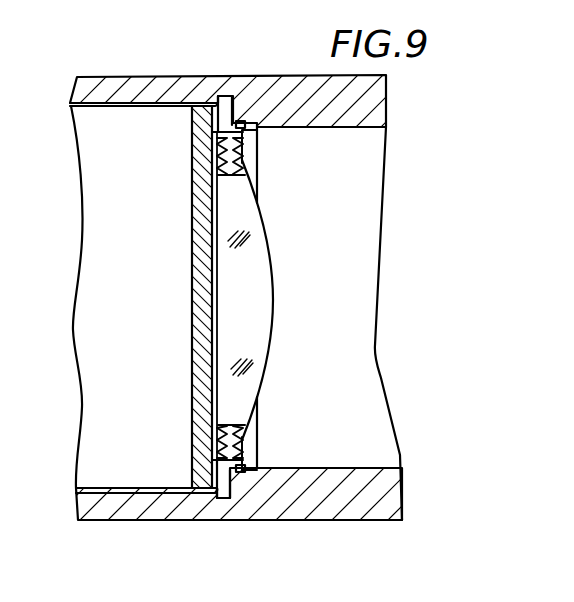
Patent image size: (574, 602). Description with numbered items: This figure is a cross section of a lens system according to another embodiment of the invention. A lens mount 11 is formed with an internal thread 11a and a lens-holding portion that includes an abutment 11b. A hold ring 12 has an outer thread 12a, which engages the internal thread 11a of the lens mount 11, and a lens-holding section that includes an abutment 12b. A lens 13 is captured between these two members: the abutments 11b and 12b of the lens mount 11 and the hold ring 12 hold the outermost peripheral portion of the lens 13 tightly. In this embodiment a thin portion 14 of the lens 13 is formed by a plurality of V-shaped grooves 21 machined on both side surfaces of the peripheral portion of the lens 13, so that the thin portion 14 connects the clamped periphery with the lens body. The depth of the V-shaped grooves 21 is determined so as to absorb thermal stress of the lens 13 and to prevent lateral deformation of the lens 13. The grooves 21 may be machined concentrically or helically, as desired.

The lens mount 11 is at (352, 487).
The internal thread 11a is at (155, 491).
The abutment 11b is at (244, 121).
The hold ring 12 is at (196, 270).
The outer thread 12a is at (208, 101).
The abutment 12b is at (226, 95).
The lens 13 is at (272, 298).
The thin portion 14 is at (229, 452).
The V-shaped grooves 21 is at (242, 468).